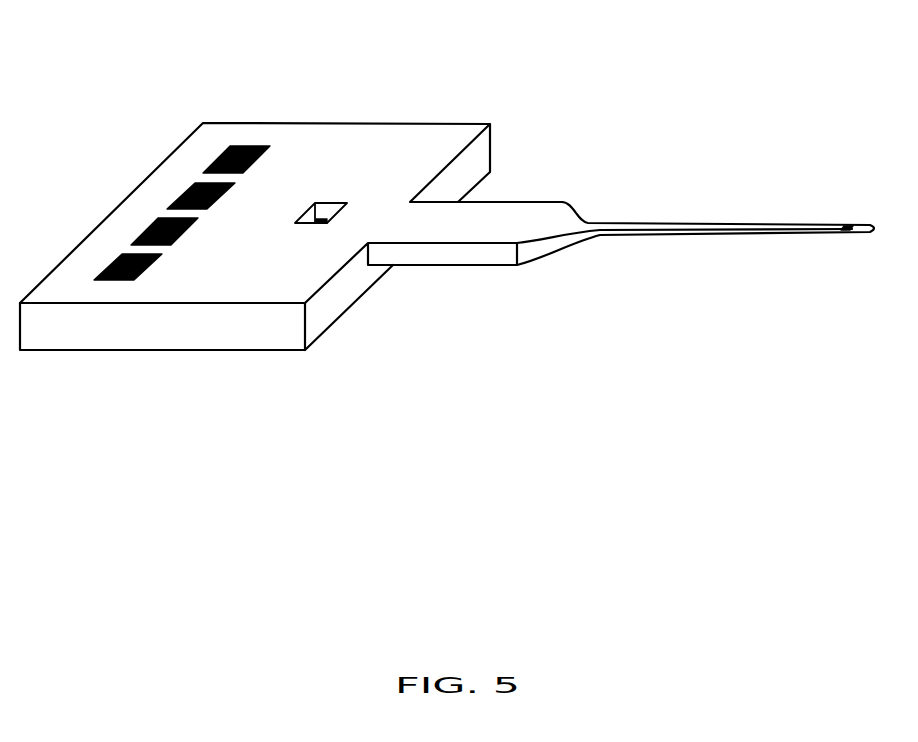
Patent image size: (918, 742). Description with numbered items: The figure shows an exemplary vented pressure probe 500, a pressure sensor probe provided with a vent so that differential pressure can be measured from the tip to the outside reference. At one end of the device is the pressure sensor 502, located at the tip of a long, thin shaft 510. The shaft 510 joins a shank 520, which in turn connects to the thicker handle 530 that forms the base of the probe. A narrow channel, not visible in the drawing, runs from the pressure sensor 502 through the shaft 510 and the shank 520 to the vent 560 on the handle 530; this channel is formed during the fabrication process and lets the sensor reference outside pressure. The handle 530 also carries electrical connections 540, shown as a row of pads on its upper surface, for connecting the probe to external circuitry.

The vented pressure probe 500 is at (686, 383).
The pressure sensor 502 is at (842, 226).
The shaft 510 is at (640, 226).
The shank 520 is at (467, 248).
The handle 530 is at (223, 340).
The electrical connections 540 is at (185, 191).
The vent 560 is at (322, 220).